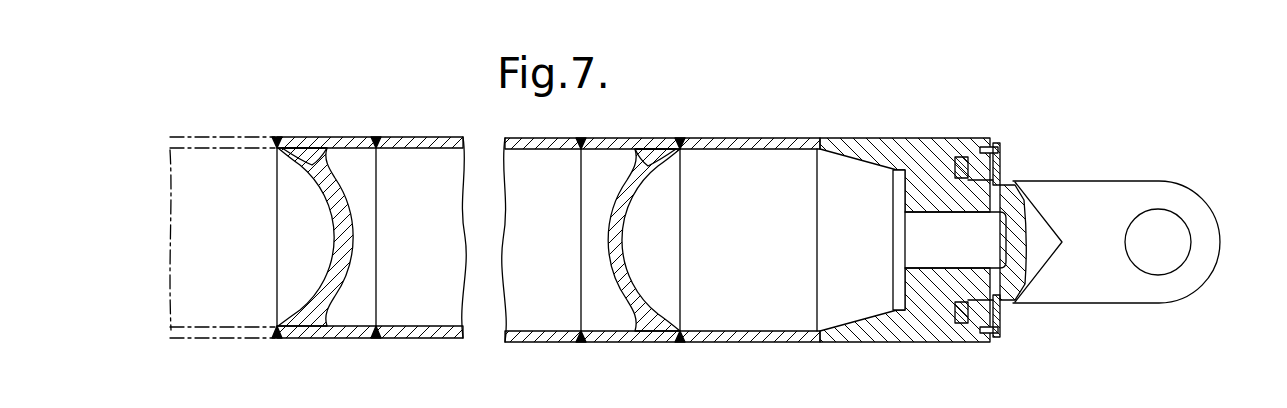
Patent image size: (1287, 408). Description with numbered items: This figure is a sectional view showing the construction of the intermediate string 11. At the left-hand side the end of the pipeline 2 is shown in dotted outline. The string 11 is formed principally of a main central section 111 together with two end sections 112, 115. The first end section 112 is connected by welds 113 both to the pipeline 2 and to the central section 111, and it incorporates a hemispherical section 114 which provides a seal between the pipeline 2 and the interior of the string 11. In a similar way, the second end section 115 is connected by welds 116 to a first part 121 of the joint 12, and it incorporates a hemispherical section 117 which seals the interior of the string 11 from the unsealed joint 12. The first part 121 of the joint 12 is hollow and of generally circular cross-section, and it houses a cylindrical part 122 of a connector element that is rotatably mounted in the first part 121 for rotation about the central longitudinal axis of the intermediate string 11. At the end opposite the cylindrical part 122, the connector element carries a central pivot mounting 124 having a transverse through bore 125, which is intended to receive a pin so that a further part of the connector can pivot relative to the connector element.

The pipeline 2 is at (229, 132).
The intermediate string 11 is at (394, 366).
The joint 12 is at (1098, 338).
The main central section 111 is at (507, 343).
The end section 112 is at (312, 148).
The welds 113 is at (376, 340).
The hemispherical section 114 is at (352, 276).
The end section 115 is at (650, 150).
The welds 116 is at (680, 343).
The hemispherical section 117 is at (633, 291).
The first part 121 is at (838, 333).
The cylindrical part 122 is at (1017, 302).
The central pivot mounting 124 is at (1128, 285).
The transverse through bore 125 is at (1162, 222).